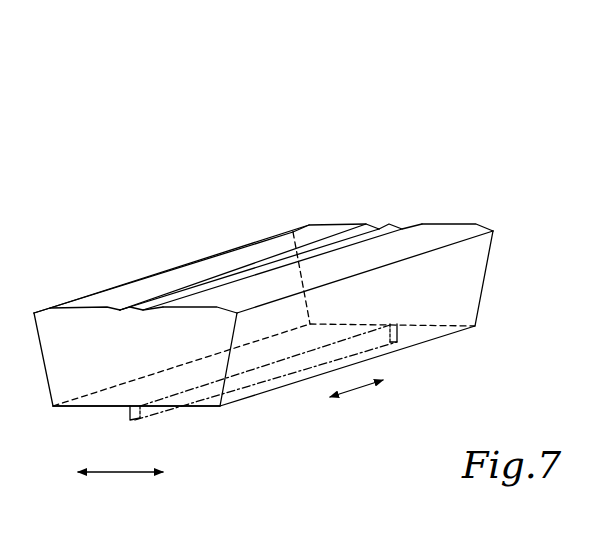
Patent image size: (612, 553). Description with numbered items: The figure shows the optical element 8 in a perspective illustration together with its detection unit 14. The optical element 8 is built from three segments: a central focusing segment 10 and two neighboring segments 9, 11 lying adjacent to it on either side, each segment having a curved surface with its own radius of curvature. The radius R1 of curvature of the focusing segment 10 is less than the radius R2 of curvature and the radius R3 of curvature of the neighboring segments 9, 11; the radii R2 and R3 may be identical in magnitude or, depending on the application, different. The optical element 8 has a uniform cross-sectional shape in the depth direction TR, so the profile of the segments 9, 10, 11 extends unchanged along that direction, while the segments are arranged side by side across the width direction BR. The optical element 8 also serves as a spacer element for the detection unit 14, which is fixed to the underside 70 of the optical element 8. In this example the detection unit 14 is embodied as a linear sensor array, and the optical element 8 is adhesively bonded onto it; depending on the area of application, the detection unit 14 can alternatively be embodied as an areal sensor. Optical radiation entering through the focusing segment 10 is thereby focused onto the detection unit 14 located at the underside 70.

The optical element 8 is at (423, 135).
The neighboring segment 9 is at (336, 228).
The central focusing segment 10 is at (393, 232).
The neighboring segment 11 is at (450, 229).
The radius of curvature of the focusing segment R1 is at (142, 314).
The radius of curvature of the neighboring segment R2 is at (91, 314).
The radius of curvature of the neighboring segment R3 is at (195, 314).
The underside 70 is at (87, 407).
The detection unit 14 is at (135, 420).
The width direction BR is at (120, 486).
The depth direction TR is at (356, 399).